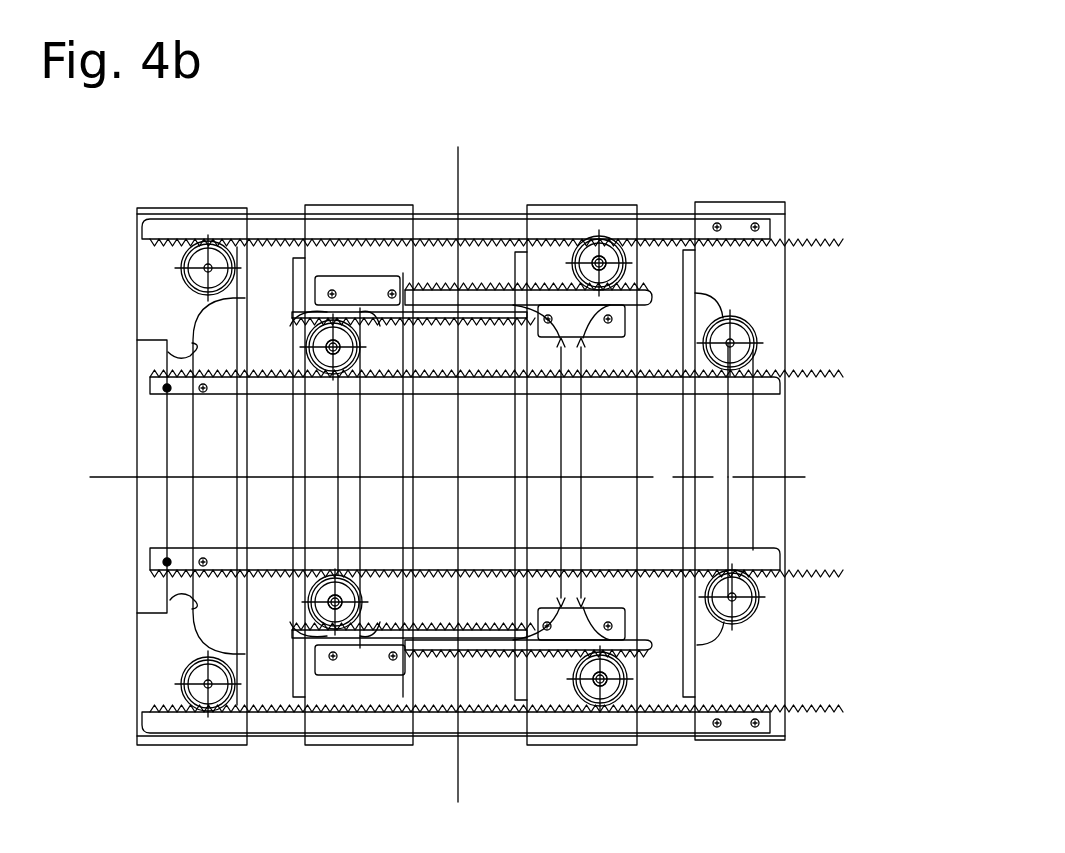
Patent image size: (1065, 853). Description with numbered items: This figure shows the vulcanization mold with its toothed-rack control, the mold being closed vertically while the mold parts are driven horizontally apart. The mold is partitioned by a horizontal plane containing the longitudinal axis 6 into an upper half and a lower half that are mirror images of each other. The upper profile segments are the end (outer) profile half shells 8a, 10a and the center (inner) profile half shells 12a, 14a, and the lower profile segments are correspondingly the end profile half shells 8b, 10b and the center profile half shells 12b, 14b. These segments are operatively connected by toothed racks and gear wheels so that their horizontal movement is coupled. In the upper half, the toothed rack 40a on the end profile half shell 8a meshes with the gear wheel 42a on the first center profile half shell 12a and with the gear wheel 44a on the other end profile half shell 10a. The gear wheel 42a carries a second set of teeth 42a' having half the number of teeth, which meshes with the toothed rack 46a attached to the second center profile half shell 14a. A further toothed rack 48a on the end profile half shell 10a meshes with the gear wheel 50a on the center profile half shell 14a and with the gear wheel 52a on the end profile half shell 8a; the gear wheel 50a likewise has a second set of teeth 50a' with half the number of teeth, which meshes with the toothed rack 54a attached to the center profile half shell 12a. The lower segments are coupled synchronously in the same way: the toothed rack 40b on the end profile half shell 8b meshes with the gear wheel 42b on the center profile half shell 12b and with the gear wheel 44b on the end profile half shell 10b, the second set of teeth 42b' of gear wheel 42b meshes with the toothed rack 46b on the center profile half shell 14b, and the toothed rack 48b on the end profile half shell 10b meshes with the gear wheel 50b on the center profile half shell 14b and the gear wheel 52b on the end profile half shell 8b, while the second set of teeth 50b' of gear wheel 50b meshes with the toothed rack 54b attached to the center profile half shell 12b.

The longitudinal axis 6 is at (123, 470).
The upper end (outer) profile half shell 8a is at (777, 210).
The lower end (outer) profile half shell 8b is at (757, 652).
The second end (outer) profile half shell 10a is at (152, 210).
The second lower end (outer) profile half shell 10b is at (155, 690).
The first center (inner) profile half shell 12a is at (538, 208).
The first lower center (inner) profile half shell 12b is at (583, 742).
The second center (inner) profile half shell 14a is at (343, 208).
The second center (inner) profile half shell 14b is at (356, 696).
The toothed rack 40a is at (650, 225).
The toothed rack 40b is at (293, 727).
The gear wheel 42a is at (619, 214).
The second set of teeth 42a' is at (636, 267).
The gear wheel 42b is at (642, 731).
The second set of teeth 42b' is at (636, 681).
The gear wheel 44a is at (220, 250).
The gear wheel 44b is at (197, 676).
The toothed rack 46a is at (418, 285).
The toothed rack 46b is at (435, 657).
The toothed rack 48a is at (768, 372).
The toothed rack 48b is at (760, 552).
The gear wheel 50a is at (214, 367).
The second set of teeth 50a' is at (363, 353).
The gear wheel 50b is at (264, 647).
The second set of teeth 50b' is at (296, 610).
The gear wheel 52a is at (738, 330).
The gear wheel 52b is at (758, 596).
The toothed rack 54a is at (572, 318).
The toothed rack 54b is at (493, 637).